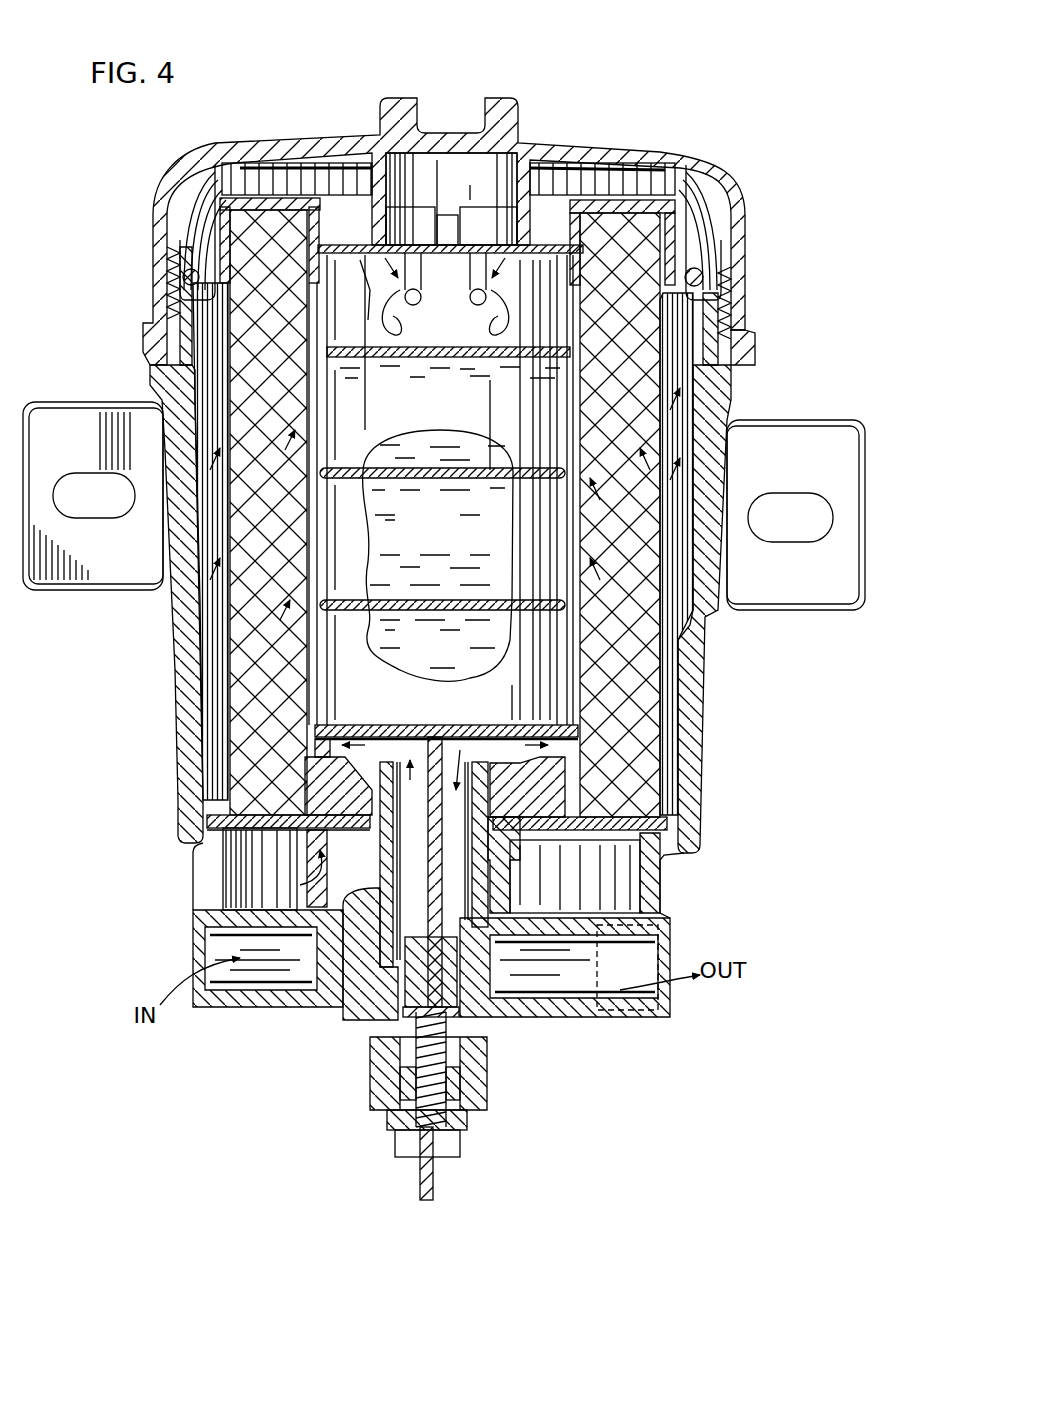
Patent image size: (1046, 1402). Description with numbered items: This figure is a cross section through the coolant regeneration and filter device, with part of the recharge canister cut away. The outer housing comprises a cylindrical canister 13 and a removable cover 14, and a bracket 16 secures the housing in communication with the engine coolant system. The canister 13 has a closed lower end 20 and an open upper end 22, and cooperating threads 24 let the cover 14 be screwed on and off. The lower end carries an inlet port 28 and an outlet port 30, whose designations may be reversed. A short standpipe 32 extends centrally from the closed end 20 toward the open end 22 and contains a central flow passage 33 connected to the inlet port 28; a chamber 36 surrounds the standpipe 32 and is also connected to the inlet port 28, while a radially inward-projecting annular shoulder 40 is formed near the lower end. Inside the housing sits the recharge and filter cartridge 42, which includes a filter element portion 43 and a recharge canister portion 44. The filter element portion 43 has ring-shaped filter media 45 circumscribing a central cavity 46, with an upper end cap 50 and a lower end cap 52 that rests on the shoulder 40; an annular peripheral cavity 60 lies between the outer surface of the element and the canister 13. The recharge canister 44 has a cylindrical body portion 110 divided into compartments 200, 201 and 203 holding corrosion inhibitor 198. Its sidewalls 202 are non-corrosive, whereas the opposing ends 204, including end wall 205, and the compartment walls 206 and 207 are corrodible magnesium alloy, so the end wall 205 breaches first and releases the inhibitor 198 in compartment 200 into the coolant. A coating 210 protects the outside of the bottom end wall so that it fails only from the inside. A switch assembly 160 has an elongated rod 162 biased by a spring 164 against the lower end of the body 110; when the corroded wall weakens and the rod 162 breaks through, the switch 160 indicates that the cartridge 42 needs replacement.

The cylindrical canister 13 is at (705, 735).
The removable cover 14 is at (670, 150).
The bracket 16 is at (793, 433).
The closed lower end 20 is at (265, 1000).
The open upper end 22 is at (175, 222).
The cooperating threads 24 is at (178, 305).
The inlet port 28 is at (215, 1005).
The outlet port 30 is at (630, 1015).
The standpipe 32 is at (295, 843).
The central flow passage 33 is at (600, 885).
The chamber 36 is at (605, 905).
The annular shoulder 40 is at (235, 822).
The recharge and filter cartridge 42 is at (640, 640).
The filter element portion 43 is at (748, 348).
The recharge canister portion 44 is at (310, 437).
The filter media 45 is at (375, 585).
The central cavity 46 is at (320, 788).
The upper end cap 50 is at (633, 183).
The lower end cap 52 is at (290, 812).
The annular peripheral cavity 60 is at (682, 770).
The cylindrical body portion 110 is at (240, 600).
The switch assembly 160 is at (460, 1130).
The elongated rod 162 is at (395, 1010).
The spring 164 is at (490, 1045).
The corrosion inhibitor 198 is at (453, 440).
The compartment 200 is at (424, 411).
The compartment 201 is at (414, 547).
The sidewalls 202 is at (730, 330).
The compartment 203 is at (417, 660).
The opposing ends 204 is at (650, 300).
The end wall 205 is at (550, 240).
The compartment wall 206 is at (357, 310).
The compartment wall 207 is at (300, 745).
The coating 210 is at (383, 722).